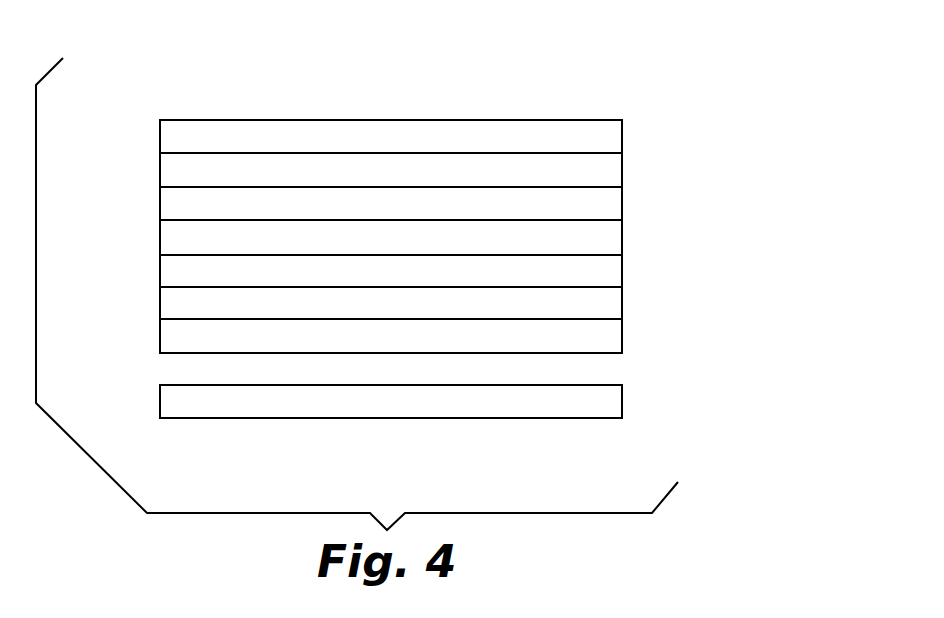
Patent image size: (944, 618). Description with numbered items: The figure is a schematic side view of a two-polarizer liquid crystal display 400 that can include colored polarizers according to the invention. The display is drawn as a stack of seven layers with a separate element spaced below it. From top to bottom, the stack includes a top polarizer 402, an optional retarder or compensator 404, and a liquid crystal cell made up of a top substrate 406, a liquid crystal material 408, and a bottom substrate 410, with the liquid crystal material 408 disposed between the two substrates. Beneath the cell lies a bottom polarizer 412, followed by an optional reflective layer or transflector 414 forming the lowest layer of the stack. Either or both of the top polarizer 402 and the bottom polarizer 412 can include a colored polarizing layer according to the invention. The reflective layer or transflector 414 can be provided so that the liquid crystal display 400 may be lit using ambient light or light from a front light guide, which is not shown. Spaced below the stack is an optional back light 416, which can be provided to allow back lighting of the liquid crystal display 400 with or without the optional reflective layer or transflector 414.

The liquid crystal display 400 is at (560, 70).
The top polarizer 402 is at (615, 138).
The retarder or compensator 404 is at (614, 168).
The top substrate 406 is at (613, 204).
The liquid crystal material 408 is at (171, 240).
The bottom substrate 410 is at (172, 275).
The bottom polarizer 412 is at (172, 307).
The reflective layer or transflector 414 is at (613, 335).
The back light 416 is at (517, 405).